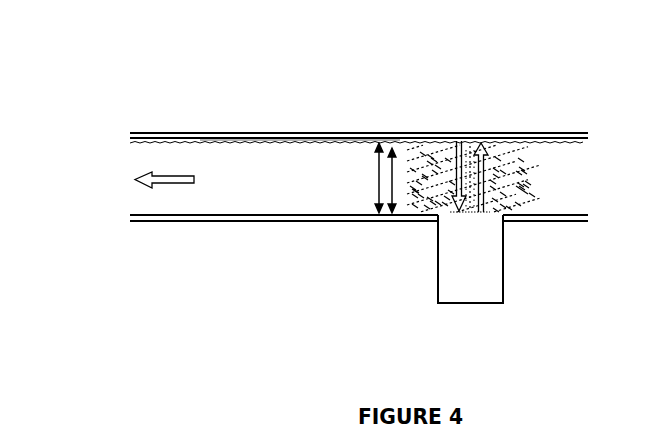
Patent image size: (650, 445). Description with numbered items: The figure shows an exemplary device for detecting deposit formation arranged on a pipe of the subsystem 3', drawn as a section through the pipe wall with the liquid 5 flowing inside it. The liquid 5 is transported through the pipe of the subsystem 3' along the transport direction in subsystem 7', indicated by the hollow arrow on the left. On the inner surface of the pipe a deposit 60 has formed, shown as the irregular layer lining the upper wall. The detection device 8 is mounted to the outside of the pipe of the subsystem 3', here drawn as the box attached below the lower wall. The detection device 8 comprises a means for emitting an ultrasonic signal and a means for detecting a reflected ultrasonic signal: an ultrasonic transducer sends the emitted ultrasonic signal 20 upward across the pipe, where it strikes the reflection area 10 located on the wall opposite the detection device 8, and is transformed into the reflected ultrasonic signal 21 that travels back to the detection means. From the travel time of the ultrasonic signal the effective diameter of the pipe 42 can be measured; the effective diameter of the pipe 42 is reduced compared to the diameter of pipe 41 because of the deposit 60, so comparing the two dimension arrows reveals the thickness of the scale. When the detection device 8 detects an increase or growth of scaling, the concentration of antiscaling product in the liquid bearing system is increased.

The pipe of the subsystem 3' is at (359, 89).
The liquid 5 is at (215, 182).
The deposit 60 is at (287, 143).
The transport direction in subsystem 7' is at (118, 164).
The detection device 8 is at (487, 250).
The reflection area 10 is at (517, 131).
The emitted ultrasonic signal 20 is at (510, 168).
The reflected ultrasonic signal 21 is at (530, 185).
The diameter of pipe 41 is at (377, 169).
The effective diameter of the pipe 42 is at (396, 183).